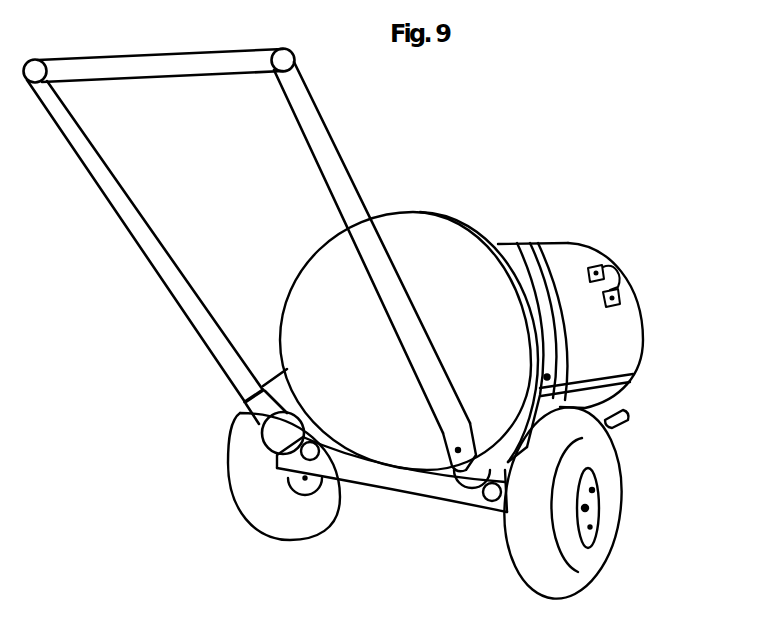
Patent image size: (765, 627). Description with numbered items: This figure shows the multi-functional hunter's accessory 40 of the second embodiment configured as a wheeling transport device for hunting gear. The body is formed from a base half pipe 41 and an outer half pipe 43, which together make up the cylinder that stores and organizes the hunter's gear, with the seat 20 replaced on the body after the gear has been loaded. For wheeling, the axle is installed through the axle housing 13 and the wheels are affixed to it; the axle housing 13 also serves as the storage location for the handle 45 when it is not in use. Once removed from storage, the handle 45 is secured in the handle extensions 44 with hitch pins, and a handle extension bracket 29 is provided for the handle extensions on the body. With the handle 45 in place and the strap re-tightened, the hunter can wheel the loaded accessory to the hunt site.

The axle housing 13 is at (365, 485).
The seat 20 is at (413, 211).
The handle extension bracket 29 is at (620, 272).
The multi-functional hunter's accessory 40 is at (535, 176).
The base half pipe 41 is at (628, 394).
The outer half pipe 43 is at (645, 330).
The handle extension 44 is at (472, 490).
The handle 45 is at (197, 333).